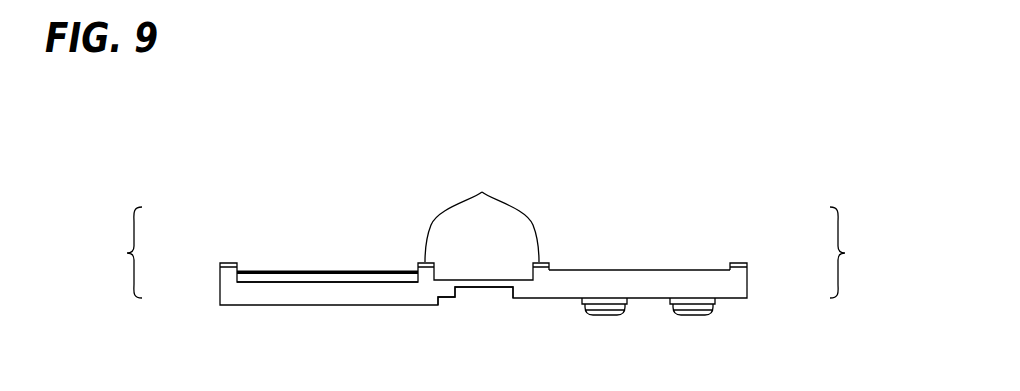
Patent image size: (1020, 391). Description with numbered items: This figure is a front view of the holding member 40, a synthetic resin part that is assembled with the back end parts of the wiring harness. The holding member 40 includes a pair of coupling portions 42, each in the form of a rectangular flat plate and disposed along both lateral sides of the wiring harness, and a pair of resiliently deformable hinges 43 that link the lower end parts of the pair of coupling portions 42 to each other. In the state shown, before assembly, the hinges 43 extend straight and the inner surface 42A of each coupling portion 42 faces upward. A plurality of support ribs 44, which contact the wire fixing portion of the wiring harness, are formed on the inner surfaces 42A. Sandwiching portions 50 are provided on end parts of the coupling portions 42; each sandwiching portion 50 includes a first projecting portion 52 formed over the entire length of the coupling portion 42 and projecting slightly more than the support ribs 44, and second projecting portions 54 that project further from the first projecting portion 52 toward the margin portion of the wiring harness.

The holding member 40 is at (667, 195).
The coupling portion 42 is at (336, 287).
The inner surface 42A is at (345, 282).
The hinge 43 is at (483, 287).
The support rib 44 is at (288, 270).
The sandwiching portion 50 is at (486, 260).
The first projecting portion 52 is at (222, 273).
The second projecting portion 54 is at (482, 192).